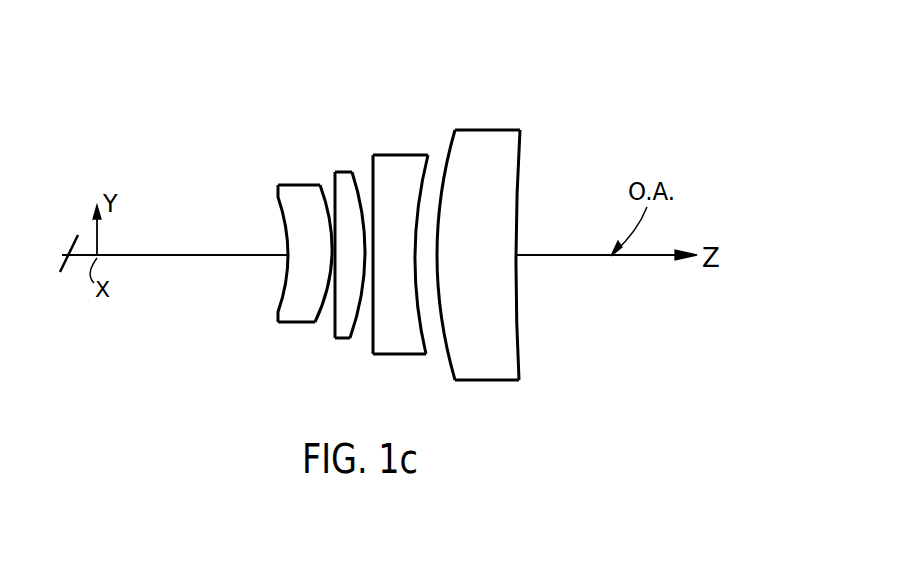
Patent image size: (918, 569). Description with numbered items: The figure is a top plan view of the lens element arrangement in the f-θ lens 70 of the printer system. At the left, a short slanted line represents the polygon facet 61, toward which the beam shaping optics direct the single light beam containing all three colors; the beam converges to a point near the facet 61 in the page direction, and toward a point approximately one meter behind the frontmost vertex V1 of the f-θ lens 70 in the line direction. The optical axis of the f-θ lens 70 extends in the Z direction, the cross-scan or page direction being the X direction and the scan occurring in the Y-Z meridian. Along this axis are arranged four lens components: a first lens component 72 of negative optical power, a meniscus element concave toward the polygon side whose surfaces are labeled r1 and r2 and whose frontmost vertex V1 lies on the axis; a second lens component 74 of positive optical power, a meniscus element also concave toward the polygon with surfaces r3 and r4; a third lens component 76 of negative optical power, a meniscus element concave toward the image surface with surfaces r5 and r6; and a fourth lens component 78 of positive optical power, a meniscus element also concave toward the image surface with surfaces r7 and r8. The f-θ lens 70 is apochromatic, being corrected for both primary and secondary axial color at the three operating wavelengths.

The polygon facet 61 is at (71, 242).
The f-θ lens 70 is at (592, 84).
The first lens component 72 is at (279, 252).
The second lens component 74 is at (316, 237).
The third lens component 76 is at (371, 237).
The fourth lens component 78 is at (465, 246).
The first lens surface of lens 72 r1 is at (278, 216).
The second lens surface of lens 72 r2 is at (313, 192).
The first lens surface of lens 74 r3 is at (332, 186).
The second lens surface of lens 74 r4 is at (352, 180).
The first lens surface of lens 76 r5 is at (370, 178).
The second lens surface of lens 76 r6 is at (422, 163).
The first lens surface of lens 78 r7 is at (446, 147).
The second lens surface of lens 78 r8 is at (512, 140).
The frontmost vertex V1 is at (287, 256).